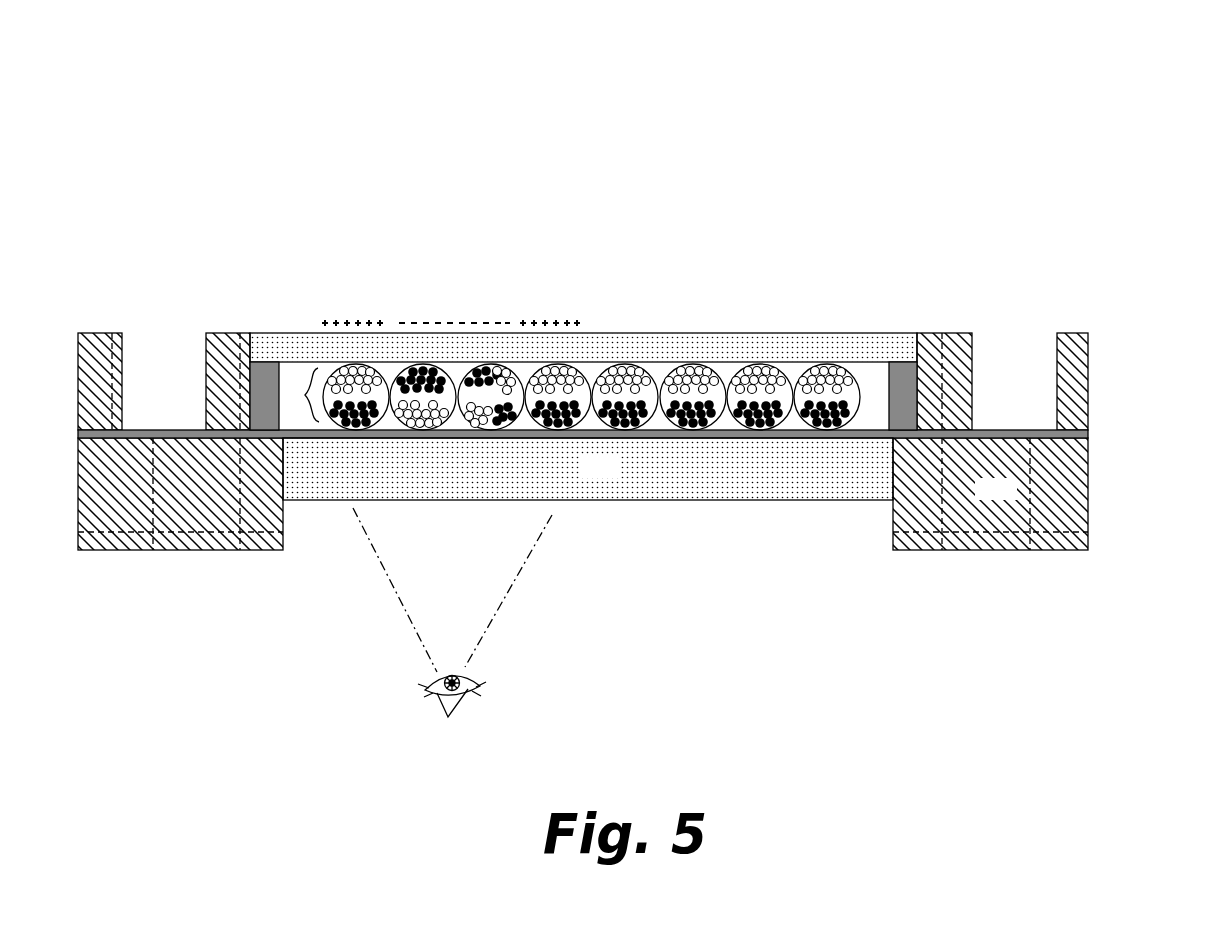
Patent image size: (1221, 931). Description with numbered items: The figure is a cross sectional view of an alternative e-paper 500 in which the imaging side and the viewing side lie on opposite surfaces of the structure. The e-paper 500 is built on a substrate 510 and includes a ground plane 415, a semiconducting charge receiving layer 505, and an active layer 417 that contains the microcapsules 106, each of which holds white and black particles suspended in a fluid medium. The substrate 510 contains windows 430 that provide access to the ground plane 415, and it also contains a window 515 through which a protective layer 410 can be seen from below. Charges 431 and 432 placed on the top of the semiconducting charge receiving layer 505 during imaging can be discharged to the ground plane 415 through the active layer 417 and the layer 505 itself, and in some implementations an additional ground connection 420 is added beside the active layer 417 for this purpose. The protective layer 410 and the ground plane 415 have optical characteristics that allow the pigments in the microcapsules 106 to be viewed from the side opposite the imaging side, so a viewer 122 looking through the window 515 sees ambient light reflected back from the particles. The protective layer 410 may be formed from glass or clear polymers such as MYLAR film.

The e-paper 500 is at (631, 392).
The microcapsules 106 is at (866, 370).
The viewer 122 is at (460, 694).
The protective layer 410 is at (616, 478).
The ground plane 415 is at (1088, 445).
The active layer 417 is at (305, 395).
The additional ground connection 420 is at (905, 373).
The windows 430 is at (1022, 362).
The charges 431 is at (545, 322).
The charges 432 is at (436, 300).
The semiconducting charge receiving layer 505 is at (720, 338).
The substrate 510 is at (1015, 500).
The window 515 is at (712, 556).